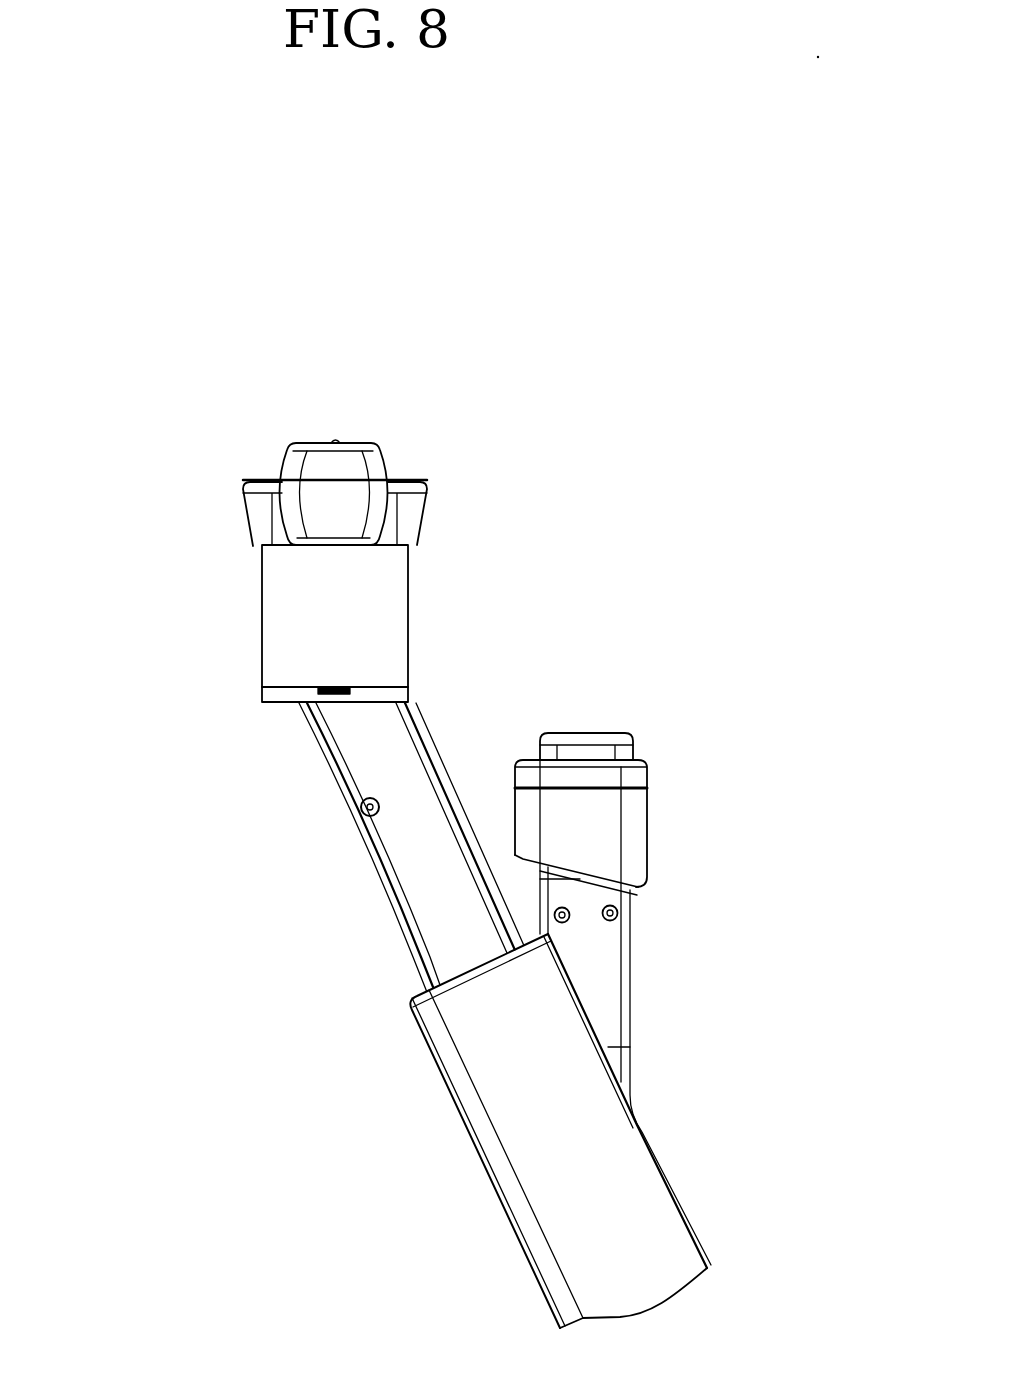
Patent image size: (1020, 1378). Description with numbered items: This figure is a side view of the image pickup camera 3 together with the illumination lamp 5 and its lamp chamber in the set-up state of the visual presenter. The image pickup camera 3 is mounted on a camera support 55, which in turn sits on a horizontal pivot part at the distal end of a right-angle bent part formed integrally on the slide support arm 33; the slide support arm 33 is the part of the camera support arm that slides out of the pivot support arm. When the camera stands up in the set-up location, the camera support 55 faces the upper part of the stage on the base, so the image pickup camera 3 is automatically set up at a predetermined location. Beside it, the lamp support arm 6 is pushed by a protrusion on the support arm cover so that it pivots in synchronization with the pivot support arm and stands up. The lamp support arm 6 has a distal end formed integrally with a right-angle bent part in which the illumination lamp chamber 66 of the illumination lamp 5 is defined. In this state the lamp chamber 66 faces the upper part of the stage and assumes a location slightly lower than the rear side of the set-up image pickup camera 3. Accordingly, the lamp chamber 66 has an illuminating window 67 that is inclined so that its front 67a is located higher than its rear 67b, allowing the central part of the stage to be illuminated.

The camera support 55 is at (262, 515).
The image pickup camera 3 is at (278, 625).
The slide support arm 33 is at (398, 767).
The illumination lamp 5 is at (526, 965).
The illumination lamp chamber 66 is at (593, 817).
The illuminating window 67 is at (580, 882).
The front 67a is at (513, 866).
The rear 67b is at (640, 894).
The lamp support arm 6 is at (600, 1003).